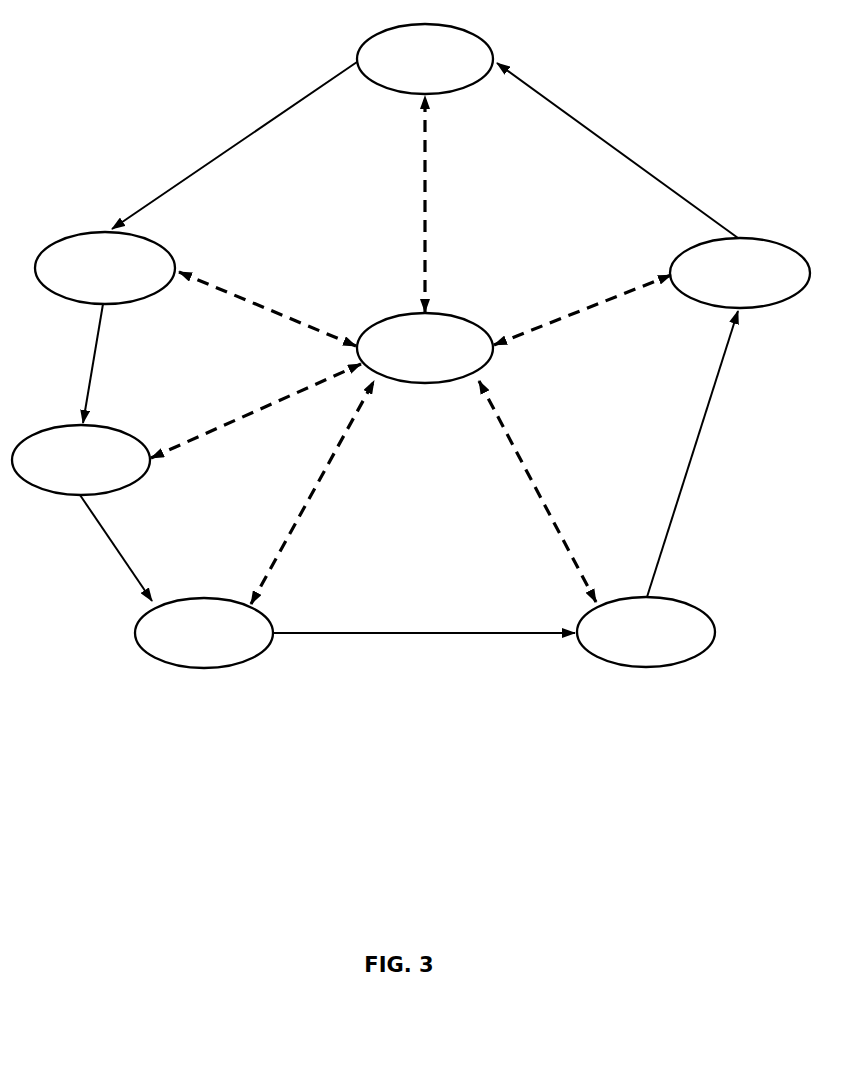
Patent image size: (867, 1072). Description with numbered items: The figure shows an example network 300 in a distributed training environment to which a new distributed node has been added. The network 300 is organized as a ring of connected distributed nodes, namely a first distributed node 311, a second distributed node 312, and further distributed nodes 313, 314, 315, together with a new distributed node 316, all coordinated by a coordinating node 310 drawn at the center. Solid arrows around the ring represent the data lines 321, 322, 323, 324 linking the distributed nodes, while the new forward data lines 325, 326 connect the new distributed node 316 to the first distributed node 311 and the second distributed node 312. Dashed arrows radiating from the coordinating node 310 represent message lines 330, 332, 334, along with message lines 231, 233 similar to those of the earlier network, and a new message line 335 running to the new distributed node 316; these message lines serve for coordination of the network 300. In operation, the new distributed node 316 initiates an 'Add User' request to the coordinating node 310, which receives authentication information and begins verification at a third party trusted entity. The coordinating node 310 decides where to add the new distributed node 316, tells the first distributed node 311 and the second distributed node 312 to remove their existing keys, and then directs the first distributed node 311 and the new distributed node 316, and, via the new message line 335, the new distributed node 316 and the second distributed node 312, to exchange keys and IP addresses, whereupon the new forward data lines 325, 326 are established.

The network 300 is at (115, 77).
The coordinating node 310 is at (407, 359).
The first distributed node 311 is at (87, 279).
The second distributed node 312 is at (186, 644).
The distributed node 313 is at (628, 643).
The distributed node 314 is at (722, 284).
The distributed node 315 is at (407, 70).
The new distributed node 316 is at (63, 471).
The data line 321 is at (399, 640).
The data line 322 is at (692, 478).
The data line 323 is at (638, 166).
The data line 324 is at (222, 158).
The new forward data line 325 is at (94, 368).
The new forward data line 326 is at (115, 548).
The message line 330 is at (225, 298).
The message line 332 is at (542, 497).
The message line 334 is at (430, 233).
The new message line 335 is at (253, 417).
The message line 231 is at (305, 515).
The message line 233 is at (600, 307).